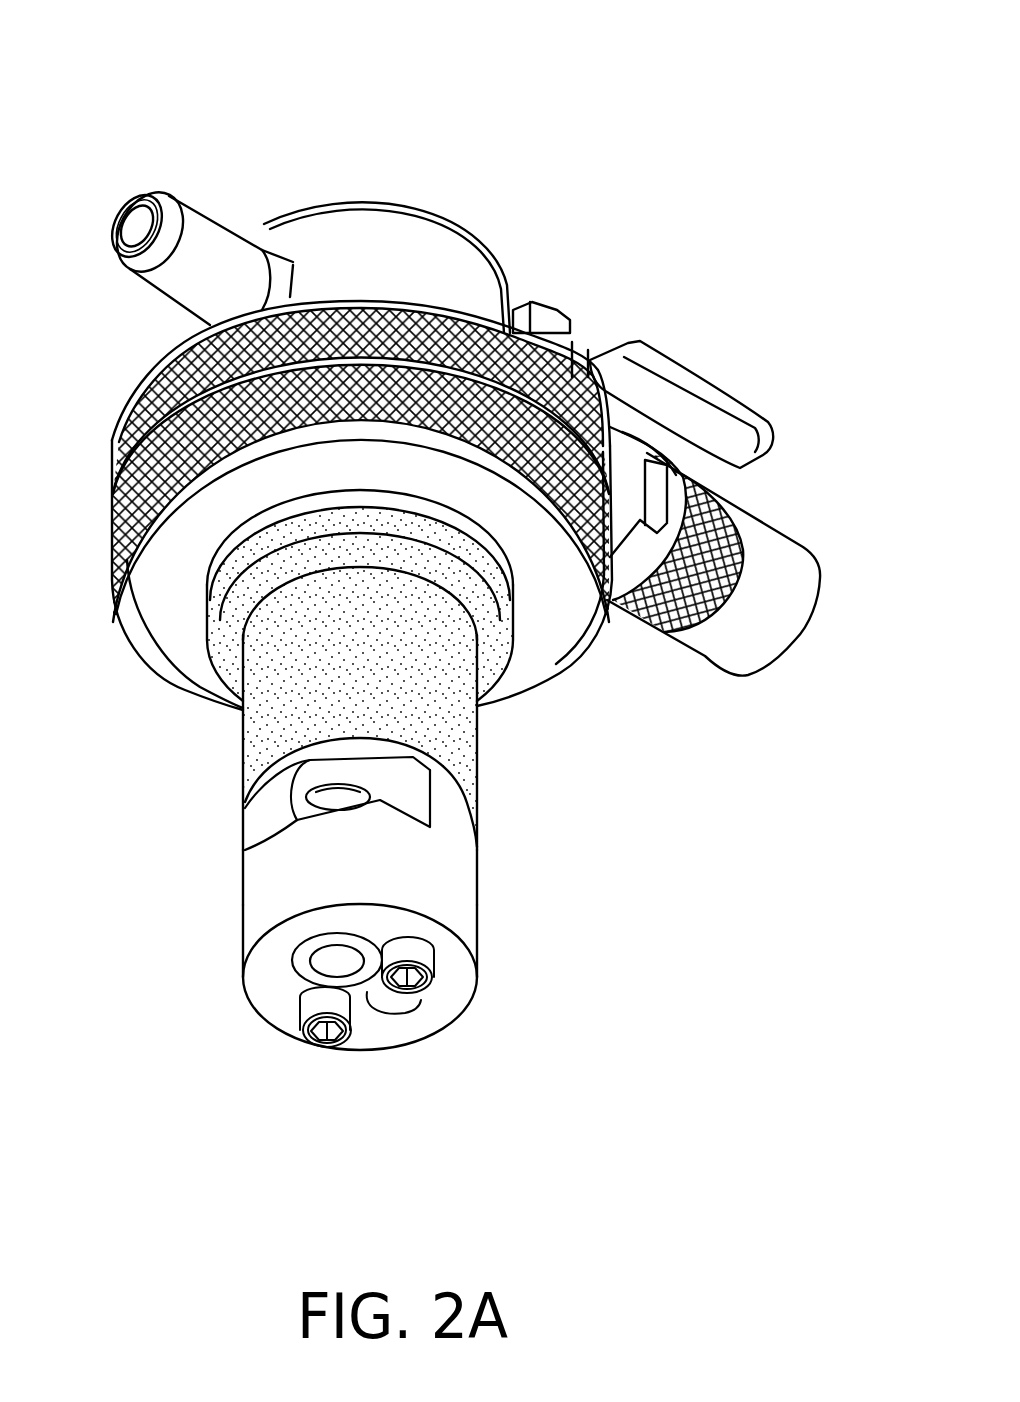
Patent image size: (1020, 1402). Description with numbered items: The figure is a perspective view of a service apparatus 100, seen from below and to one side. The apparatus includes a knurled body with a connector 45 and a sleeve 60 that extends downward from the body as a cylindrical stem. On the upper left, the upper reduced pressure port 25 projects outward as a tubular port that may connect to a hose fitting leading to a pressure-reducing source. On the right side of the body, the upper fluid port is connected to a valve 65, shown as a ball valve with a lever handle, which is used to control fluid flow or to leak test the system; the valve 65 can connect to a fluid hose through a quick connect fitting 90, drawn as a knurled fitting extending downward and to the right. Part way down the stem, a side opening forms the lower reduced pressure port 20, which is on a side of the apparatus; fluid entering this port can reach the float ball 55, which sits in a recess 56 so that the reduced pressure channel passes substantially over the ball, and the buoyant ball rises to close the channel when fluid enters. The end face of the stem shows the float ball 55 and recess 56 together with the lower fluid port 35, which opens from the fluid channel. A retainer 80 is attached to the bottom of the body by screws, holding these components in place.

The service apparatus 100 is at (406, 118).
The upper reduced pressure port 25 is at (262, 250).
The valve 65 is at (548, 300).
The quick connect fitting 90 is at (640, 623).
The sleeve 60 is at (457, 733).
The lower reduced pressure port 20 is at (262, 808).
The connector 45 is at (465, 860).
The retainer 80 is at (268, 885).
The recess 56 is at (302, 968).
The float ball 55 is at (342, 973).
The lower fluid port 35 is at (406, 1013).